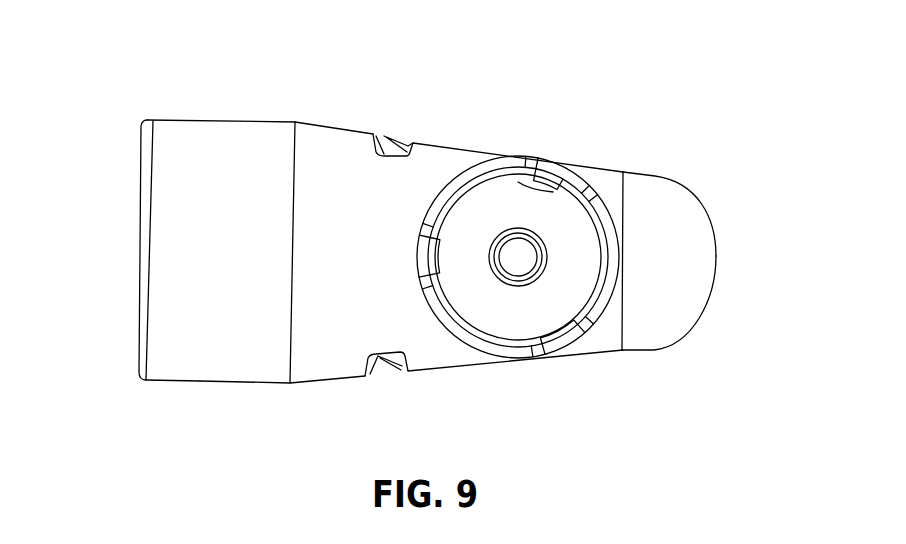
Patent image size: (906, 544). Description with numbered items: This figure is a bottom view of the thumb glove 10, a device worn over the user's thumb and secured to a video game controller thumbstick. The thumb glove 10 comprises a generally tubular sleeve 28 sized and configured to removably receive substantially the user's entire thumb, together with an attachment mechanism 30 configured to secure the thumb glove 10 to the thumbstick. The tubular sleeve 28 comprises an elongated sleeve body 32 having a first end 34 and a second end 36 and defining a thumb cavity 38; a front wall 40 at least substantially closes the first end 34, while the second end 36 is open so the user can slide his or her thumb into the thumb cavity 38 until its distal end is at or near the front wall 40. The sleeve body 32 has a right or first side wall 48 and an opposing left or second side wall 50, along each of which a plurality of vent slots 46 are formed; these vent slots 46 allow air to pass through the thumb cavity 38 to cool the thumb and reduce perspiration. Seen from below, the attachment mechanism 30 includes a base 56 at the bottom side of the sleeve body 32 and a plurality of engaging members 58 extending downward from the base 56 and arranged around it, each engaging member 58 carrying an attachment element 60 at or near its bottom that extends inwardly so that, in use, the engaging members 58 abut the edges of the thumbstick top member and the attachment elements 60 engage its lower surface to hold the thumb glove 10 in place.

The thumb glove 10 is at (641, 136).
The tubular sleeve 28 is at (176, 180).
The attachment mechanism 30 is at (614, 184).
The sleeve body 32 is at (252, 335).
The first end 34 is at (706, 352).
The second end 36 is at (148, 400).
The thumb cavity 38 is at (123, 265).
The front wall 40 is at (685, 255).
The vent slots 46 is at (395, 146).
The first side wall 48 is at (242, 107).
The second side wall 50 is at (306, 402).
The base 56 is at (612, 246).
The engaging members 58 is at (558, 340).
The attachment element 60 is at (518, 182).